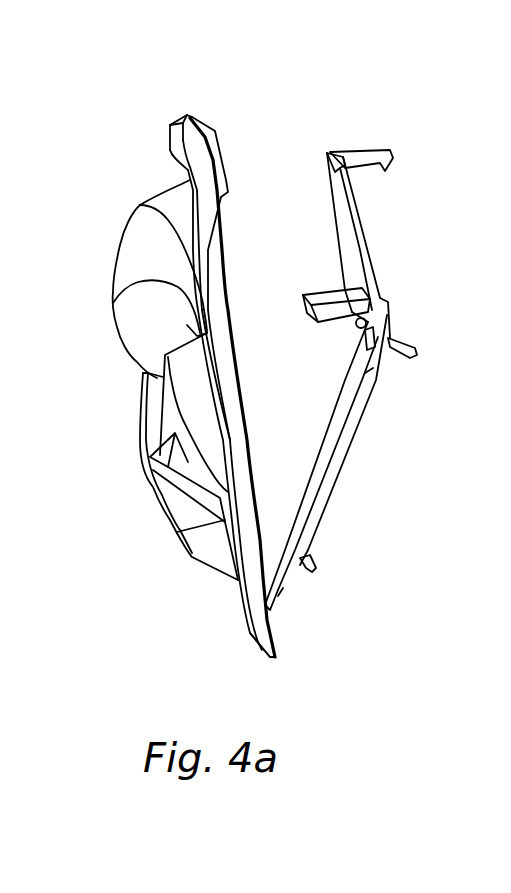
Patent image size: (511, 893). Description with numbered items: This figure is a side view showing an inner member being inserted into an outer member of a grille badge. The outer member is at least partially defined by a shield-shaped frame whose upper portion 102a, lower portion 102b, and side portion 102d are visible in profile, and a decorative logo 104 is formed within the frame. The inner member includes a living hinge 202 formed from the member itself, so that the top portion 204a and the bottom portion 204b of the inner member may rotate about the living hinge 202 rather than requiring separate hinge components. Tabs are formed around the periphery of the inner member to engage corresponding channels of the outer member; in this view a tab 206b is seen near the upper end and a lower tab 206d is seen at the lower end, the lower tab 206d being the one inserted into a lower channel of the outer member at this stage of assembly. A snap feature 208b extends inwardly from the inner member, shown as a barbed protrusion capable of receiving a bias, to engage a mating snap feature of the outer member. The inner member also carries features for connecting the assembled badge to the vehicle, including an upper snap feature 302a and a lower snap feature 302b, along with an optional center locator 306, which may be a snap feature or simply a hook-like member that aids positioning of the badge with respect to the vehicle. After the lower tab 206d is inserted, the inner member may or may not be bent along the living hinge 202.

The upper portion of the frame 102a is at (172, 117).
The lower portion of the frame 102b is at (260, 643).
The side portion of the frame 102d is at (223, 249).
The decorative logo 104 is at (123, 238).
The living hinge 202 is at (355, 323).
The top portion of the inner member 204a is at (365, 235).
The bottom portion of the inner member 204b is at (342, 458).
The tab 206b is at (343, 178).
The lower tab 206d is at (282, 595).
The snap feature 208b is at (337, 293).
The upper snap feature 302a is at (367, 152).
The lower snap feature 302b is at (318, 568).
The center locator 306 is at (416, 350).